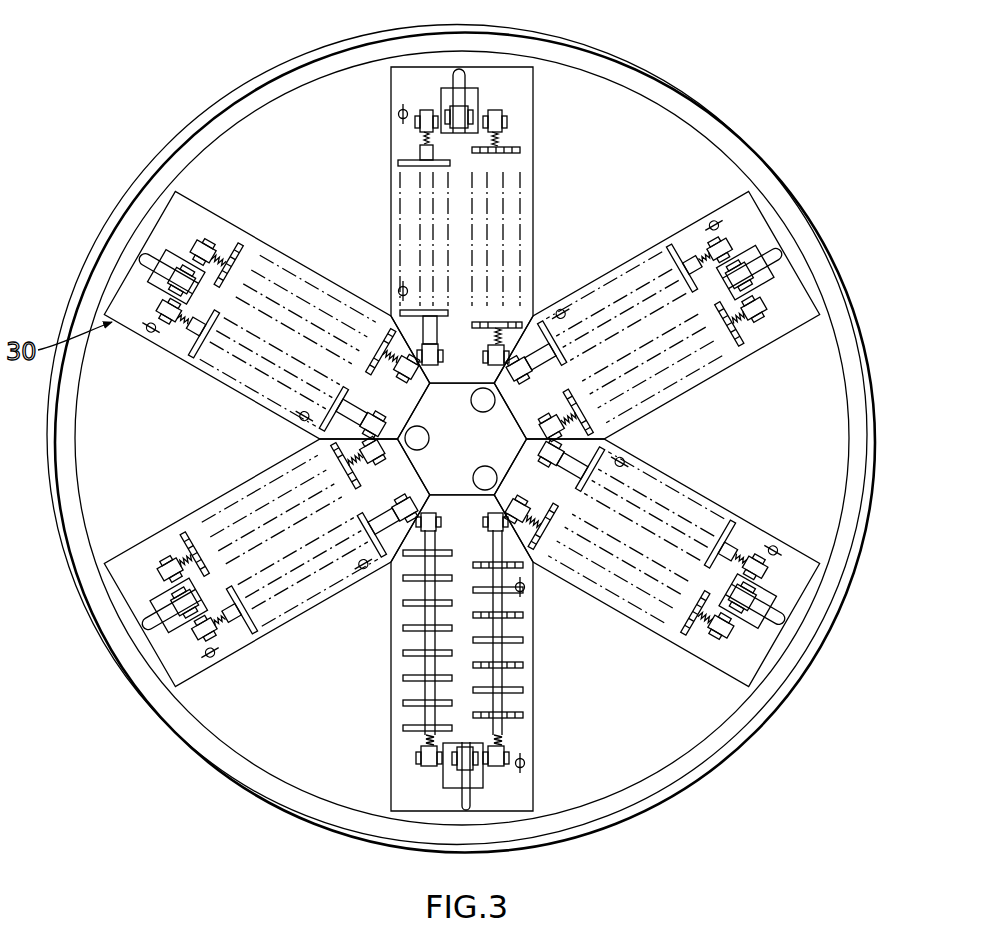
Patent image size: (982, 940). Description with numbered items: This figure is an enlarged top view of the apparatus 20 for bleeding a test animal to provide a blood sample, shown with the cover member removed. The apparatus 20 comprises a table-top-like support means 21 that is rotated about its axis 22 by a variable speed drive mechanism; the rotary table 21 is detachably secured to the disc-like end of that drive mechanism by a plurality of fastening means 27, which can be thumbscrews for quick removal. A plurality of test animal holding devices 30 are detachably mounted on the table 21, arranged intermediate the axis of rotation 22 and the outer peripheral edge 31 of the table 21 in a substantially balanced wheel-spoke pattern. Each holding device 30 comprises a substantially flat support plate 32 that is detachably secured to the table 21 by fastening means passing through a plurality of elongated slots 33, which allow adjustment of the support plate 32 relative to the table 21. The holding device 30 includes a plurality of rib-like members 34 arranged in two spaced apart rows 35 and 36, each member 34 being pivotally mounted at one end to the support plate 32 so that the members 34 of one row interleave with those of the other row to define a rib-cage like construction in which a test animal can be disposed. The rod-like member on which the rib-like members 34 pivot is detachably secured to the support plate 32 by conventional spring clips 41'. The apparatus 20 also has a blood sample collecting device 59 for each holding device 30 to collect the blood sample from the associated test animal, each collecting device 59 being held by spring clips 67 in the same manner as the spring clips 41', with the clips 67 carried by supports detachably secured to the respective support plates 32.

The apparatus 20 is at (810, 104).
The table-top-like support means 21 is at (810, 370).
The axis 22 is at (462, 441).
The fastening means 27 is at (420, 430).
The test animal holding device 30 is at (537, 94).
The outer peripheral edge 31 is at (849, 473).
The support plate 32 is at (175, 212).
The elongated slots 33 is at (144, 332).
The rib-like members 34 is at (405, 683).
The first row 35 is at (142, 586).
The second row 36 is at (778, 577).
The spring clips 41' is at (376, 396).
The blood sample collecting device 59 is at (456, 98).
The spring clips 67 is at (440, 118).